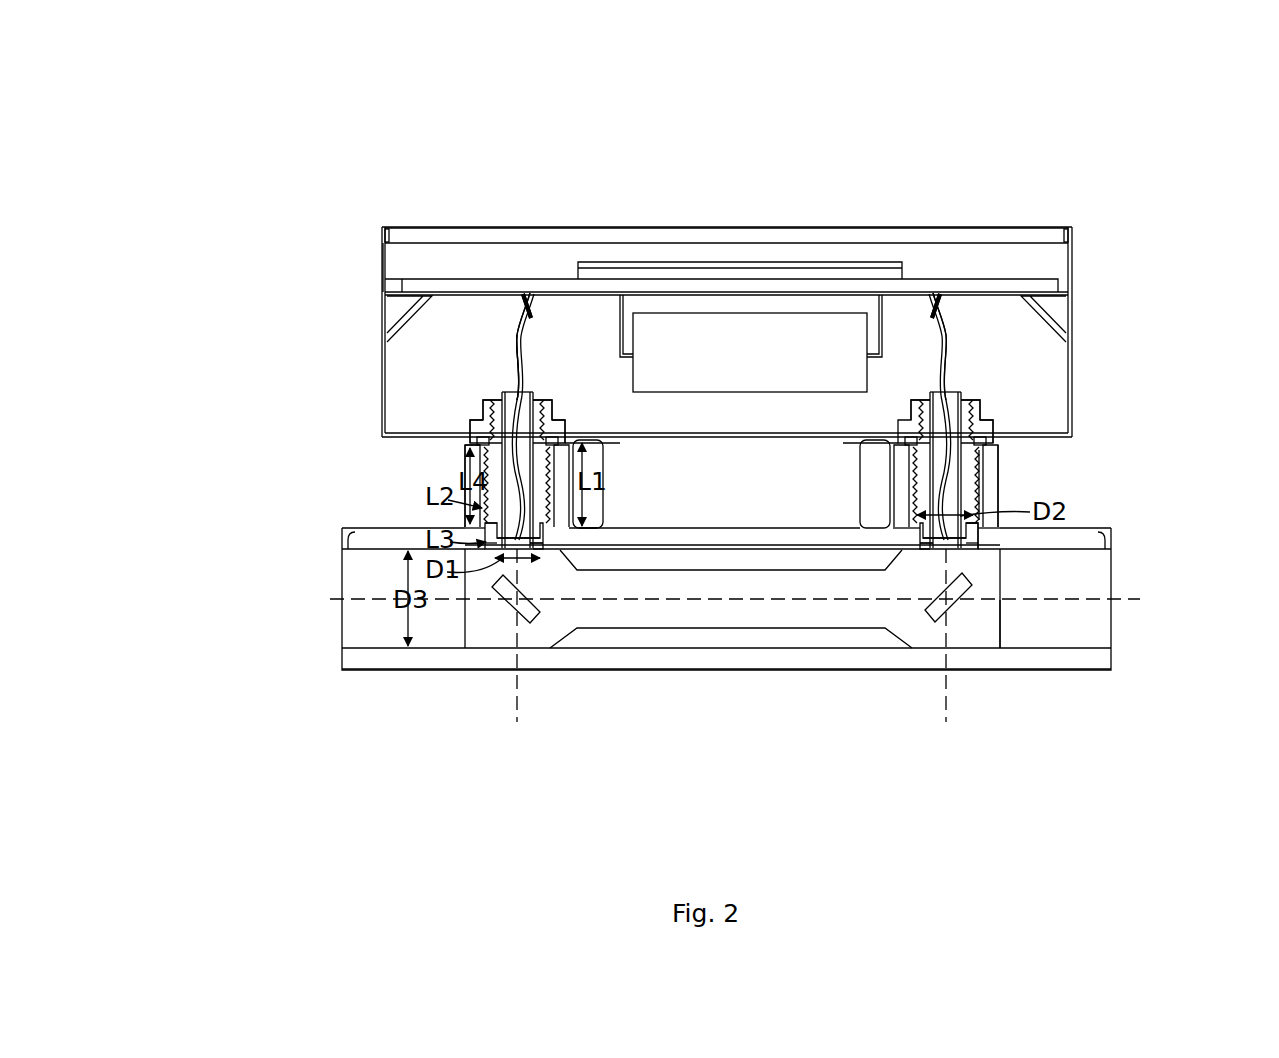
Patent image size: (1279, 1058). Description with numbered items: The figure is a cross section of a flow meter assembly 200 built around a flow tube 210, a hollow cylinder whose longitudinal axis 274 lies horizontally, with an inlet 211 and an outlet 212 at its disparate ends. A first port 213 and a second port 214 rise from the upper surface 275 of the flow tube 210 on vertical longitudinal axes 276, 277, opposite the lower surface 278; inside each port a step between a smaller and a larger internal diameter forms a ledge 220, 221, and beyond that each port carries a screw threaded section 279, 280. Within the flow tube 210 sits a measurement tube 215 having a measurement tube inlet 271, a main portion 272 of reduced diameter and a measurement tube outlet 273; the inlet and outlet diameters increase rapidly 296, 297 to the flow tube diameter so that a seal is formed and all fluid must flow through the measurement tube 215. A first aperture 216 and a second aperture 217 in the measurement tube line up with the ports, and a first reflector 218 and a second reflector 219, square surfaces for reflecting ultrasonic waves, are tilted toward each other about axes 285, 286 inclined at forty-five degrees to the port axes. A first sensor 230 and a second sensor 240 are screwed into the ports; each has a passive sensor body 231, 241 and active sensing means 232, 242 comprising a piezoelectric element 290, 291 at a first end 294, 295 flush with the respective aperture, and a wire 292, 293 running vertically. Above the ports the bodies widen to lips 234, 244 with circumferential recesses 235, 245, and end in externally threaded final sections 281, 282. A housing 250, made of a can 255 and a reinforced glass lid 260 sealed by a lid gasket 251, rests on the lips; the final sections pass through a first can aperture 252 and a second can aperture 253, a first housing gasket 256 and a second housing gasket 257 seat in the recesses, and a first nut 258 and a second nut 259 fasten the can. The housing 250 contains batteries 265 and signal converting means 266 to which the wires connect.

The flow meter assembly 200 is at (1150, 108).
The flow tube 210 is at (1183, 528).
The inlet 211 is at (342, 632).
The outlet 212 is at (1113, 627).
The first port 213 is at (603, 467).
The second port 214 is at (860, 467).
The measurement tube 215 is at (1000, 777).
The first aperture 216 is at (545, 550).
The second aperture 217 is at (920, 550).
The first reflector 218 is at (500, 598).
The second reflector 219 is at (962, 598).
The ledge 220 is at (597, 530).
The ledge 221 is at (965, 548).
The first sensor 230 is at (367, 293).
The sensor body 231 is at (466, 480).
The sensing means 232 is at (513, 340).
The lip 234 is at (463, 453).
The recess 235 is at (475, 435).
The second sensor 240 is at (1106, 293).
The sensor body 241 is at (1012, 456).
The sensing means 242 is at (953, 327).
The lip 244 is at (1002, 447).
The recess 245 is at (985, 437).
The housing 250 is at (242, 227).
The lid gasket 251 is at (1075, 230).
The first can aperture 252 is at (547, 393).
The second can aperture 253 is at (975, 393).
The can 255 is at (382, 265).
The first housing gasket 256 is at (548, 436).
The second housing gasket 257 is at (903, 440).
The first nut 258 is at (483, 398).
The second nut 259 is at (995, 400).
The lid 260 is at (452, 227).
The batteries 265 is at (633, 368).
The signal converting means 266 is at (930, 279).
The measurement tube inlet 271 is at (465, 623).
The main portion 272 is at (785, 628).
The measurement tube outlet 273 is at (1000, 620).
The longitudinal axis 274 is at (702, 599).
The upper surface 275 is at (737, 528).
The longitudinal axis 276 is at (517, 652).
The longitudinal axis 277 is at (944, 652).
The lower surface 278 is at (690, 672).
The screw threaded section 279 is at (570, 447).
The screw threaded section 280 is at (987, 470).
The final section 281 is at (655, 400).
The final section 282 is at (828, 400).
The axis 285 is at (503, 590).
The axis 286 is at (963, 617).
The piezoelectric element 290 is at (545, 545).
The piezoelectric element 291 is at (925, 545).
The wire 292 is at (522, 295).
The wire 293 is at (950, 295).
The first end 294 is at (533, 550).
The first end 295 is at (930, 550).
The rapid increase 296 is at (540, 550).
The rapid increase 297 is at (923, 550).